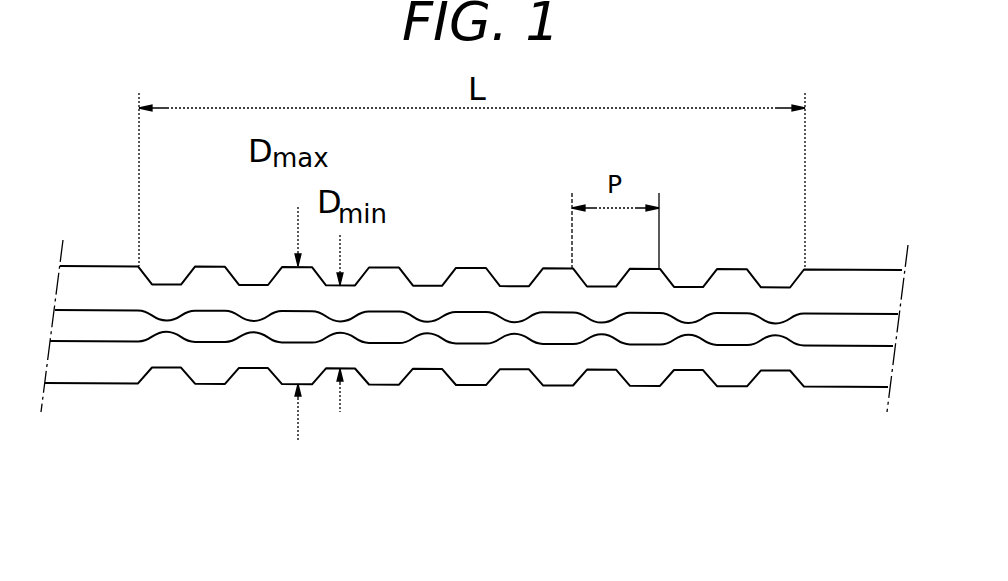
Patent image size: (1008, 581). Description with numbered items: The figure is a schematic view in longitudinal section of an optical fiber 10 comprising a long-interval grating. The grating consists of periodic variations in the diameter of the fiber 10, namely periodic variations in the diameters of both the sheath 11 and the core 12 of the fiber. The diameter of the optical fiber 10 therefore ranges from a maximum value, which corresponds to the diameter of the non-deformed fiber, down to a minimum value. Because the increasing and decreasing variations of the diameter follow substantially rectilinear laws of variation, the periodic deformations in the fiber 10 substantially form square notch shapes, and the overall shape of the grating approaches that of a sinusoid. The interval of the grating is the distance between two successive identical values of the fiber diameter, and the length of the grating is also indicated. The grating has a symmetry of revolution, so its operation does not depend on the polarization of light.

The optical fiber 10 is at (482, 322).
The sheath 11 is at (182, 352).
The core 12 is at (293, 325).